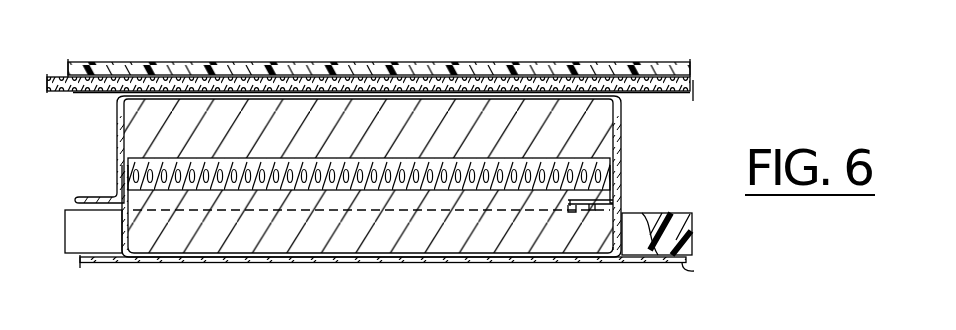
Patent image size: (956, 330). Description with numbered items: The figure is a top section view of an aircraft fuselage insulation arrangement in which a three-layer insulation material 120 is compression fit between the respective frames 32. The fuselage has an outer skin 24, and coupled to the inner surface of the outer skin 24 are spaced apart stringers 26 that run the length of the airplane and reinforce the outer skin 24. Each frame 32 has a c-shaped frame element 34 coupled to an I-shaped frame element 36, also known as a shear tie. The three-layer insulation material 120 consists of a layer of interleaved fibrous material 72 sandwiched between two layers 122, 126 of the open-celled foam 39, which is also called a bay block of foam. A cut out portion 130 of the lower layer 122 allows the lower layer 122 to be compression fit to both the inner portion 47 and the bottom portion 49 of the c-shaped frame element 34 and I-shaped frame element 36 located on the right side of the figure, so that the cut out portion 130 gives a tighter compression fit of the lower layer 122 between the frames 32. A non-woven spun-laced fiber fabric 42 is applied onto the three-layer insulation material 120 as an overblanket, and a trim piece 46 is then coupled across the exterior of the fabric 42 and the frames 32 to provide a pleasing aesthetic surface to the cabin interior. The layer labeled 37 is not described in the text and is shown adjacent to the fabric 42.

The outer skin 24 is at (693, 270).
The stringer 26 is at (692, 232).
The frame 32 is at (368, 191).
The c-shaped frame element 34 is at (617, 121).
The I-shaped frame element 36 is at (622, 194).
The adhesive layer 37 is at (123, 106).
The open-celled foam 39 is at (375, 141).
The non-woven spun-laced fiber fabric 42 is at (240, 80).
The trim piece 46 is at (131, 74).
The inner portion 47 is at (582, 200).
The bottom portion 49 is at (569, 213).
The interleaved fibrous material 72 is at (211, 160).
The three-layer insulation material 120 is at (100, 146).
The lower layer 122 is at (195, 242).
The upper layer 126 is at (136, 108).
The cut out portion 130 is at (592, 207).